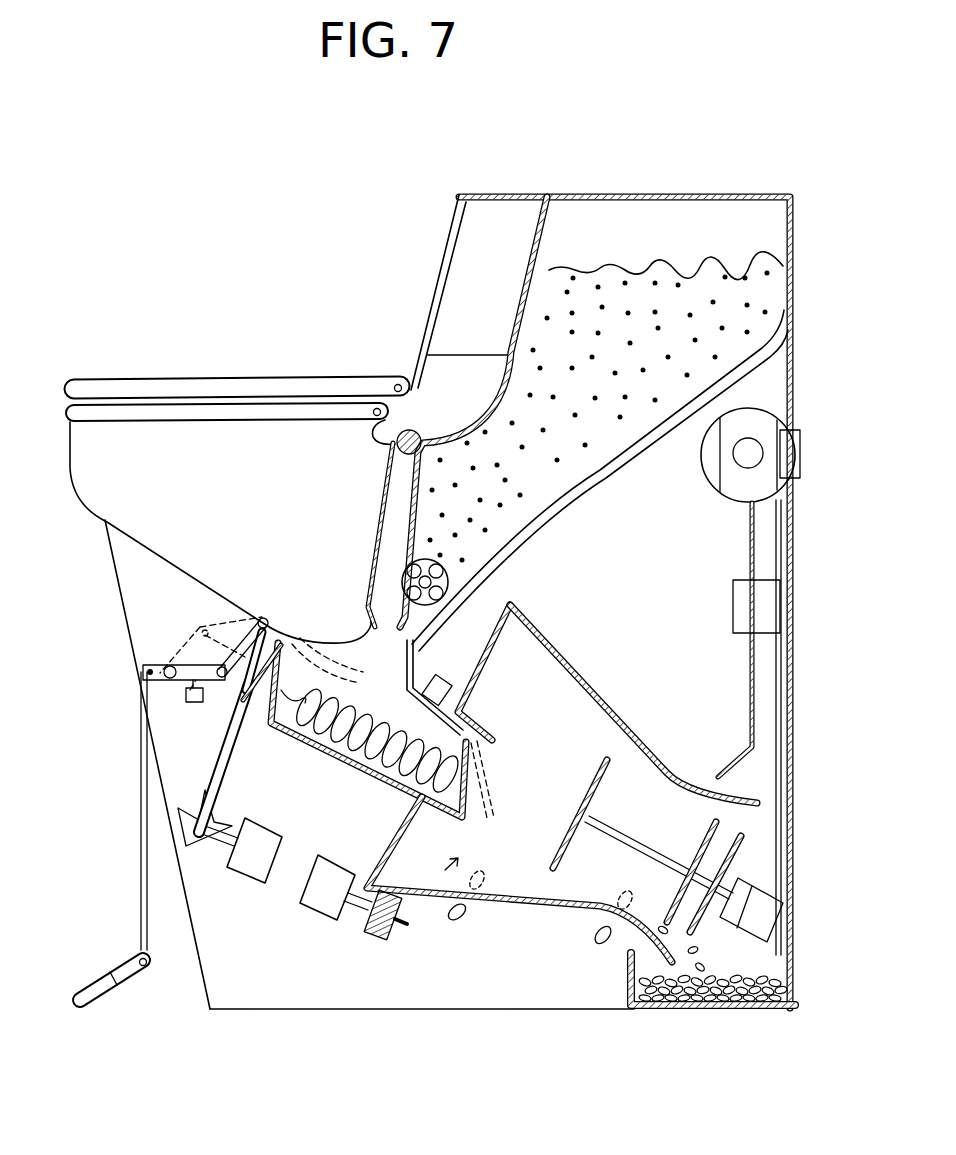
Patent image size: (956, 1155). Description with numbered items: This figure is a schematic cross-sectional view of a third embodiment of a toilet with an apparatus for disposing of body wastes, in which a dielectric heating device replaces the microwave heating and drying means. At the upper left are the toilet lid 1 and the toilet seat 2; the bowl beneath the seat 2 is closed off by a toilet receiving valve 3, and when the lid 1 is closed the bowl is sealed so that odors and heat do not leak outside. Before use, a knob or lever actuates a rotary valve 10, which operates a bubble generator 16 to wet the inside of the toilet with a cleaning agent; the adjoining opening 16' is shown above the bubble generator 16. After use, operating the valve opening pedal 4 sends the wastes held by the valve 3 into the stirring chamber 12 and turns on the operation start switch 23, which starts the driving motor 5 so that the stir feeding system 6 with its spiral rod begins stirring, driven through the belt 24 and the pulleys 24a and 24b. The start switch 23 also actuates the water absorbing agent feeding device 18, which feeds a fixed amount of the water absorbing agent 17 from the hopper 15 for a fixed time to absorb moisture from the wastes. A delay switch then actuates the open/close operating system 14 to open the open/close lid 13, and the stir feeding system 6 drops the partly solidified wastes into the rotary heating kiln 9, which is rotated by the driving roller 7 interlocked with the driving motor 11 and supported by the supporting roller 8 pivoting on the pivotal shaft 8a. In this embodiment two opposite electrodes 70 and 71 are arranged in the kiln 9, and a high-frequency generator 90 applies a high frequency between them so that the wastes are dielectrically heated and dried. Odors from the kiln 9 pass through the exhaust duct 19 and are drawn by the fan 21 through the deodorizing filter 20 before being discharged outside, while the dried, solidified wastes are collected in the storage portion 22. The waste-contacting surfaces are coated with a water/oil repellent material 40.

The toilet lid 1 is at (140, 392).
The toilet seat 2 is at (228, 410).
The toilet receiving valve 3 is at (305, 632).
The valve opening pedal 4 is at (100, 975).
The driving motor 5 is at (243, 880).
The stir feeding system 6 is at (297, 728).
The driving roller 7 is at (372, 940).
The supporting roller 8 is at (450, 912).
The pivotal shaft 8a is at (478, 905).
The rotary heating kiln 9 is at (612, 708).
The rotary valve 10 is at (385, 462).
The driving motor 11 is at (310, 910).
The stirring chamber 12 is at (332, 745).
The open/close lid 13 is at (492, 782).
The open/close operating system 14 is at (440, 680).
The hopper 15 is at (588, 210).
The bubble generator 16 is at (433, 337).
The upper opening 16' is at (416, 292).
The water absorbing agent 17 is at (697, 270).
The water absorbing agent feeding device 18 is at (450, 588).
The exhaust duct 19 is at (790, 712).
The deodorizing filter 20 is at (770, 620).
The fan 21 is at (770, 445).
The storage portion 22 is at (670, 1010).
The operation start switch 23 is at (187, 694).
The belt 24 is at (222, 739).
The pulley 24a is at (192, 824).
The pulley 24b is at (262, 706).
The water/oil repellent material 40 is at (553, 668).
The electrode 70 is at (600, 801).
The electrode 71 is at (690, 856).
The high-frequency generator 90 is at (790, 904).